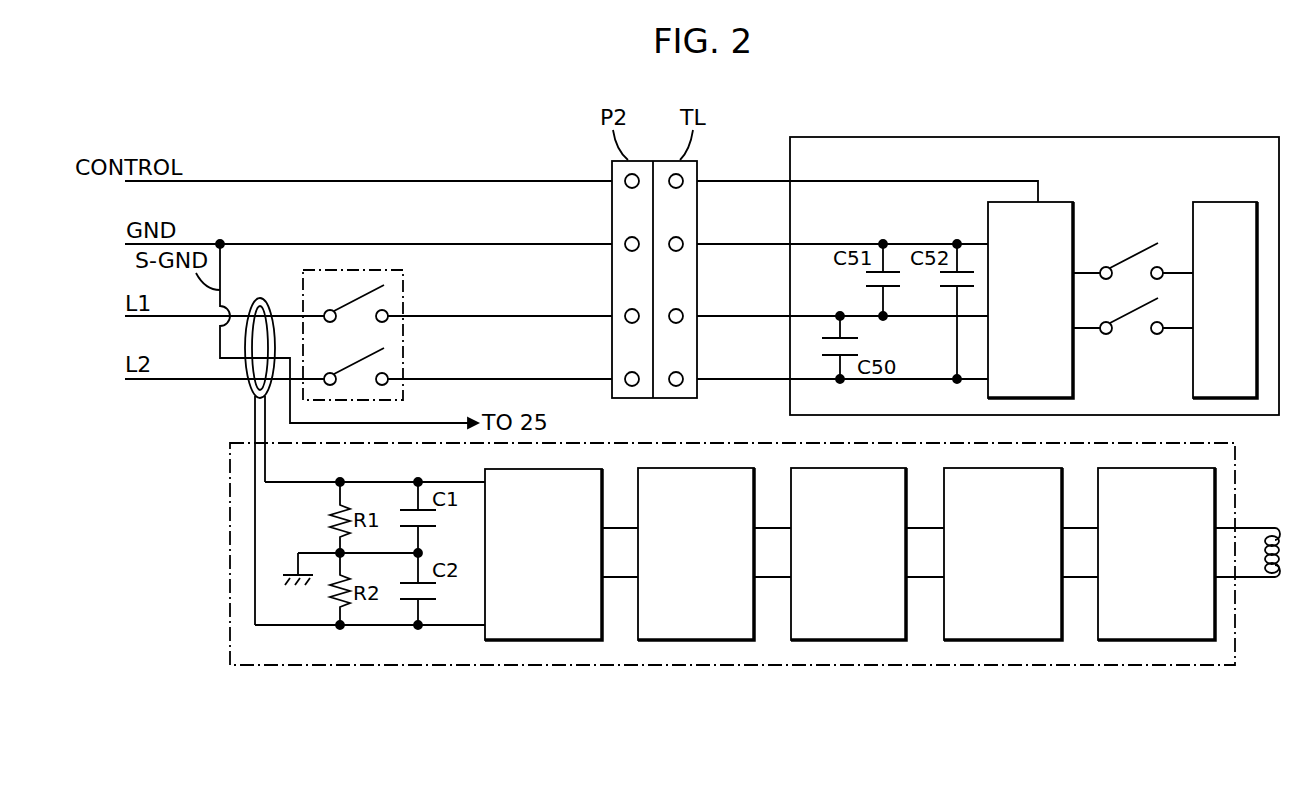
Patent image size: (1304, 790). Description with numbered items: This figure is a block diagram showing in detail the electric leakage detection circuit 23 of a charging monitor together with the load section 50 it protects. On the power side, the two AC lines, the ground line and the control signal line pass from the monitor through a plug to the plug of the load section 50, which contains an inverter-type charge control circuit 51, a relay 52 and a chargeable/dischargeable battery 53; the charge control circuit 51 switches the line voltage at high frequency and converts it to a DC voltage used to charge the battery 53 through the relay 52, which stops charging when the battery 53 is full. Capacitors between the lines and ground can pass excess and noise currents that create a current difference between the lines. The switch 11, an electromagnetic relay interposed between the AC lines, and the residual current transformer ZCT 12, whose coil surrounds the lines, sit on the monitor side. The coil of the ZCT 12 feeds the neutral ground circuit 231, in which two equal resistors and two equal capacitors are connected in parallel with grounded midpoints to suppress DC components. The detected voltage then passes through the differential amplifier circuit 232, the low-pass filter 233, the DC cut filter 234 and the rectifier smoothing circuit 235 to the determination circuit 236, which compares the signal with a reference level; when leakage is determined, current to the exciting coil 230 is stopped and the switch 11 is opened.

The switch 11 is at (405, 288).
The residual current transformer (ZCT) 12 is at (258, 298).
The load section 50 is at (1173, 136).
The charge control circuit 51 is at (1058, 200).
The relay 52 is at (1130, 240).
The battery 53 is at (1222, 200).
The electric leakage detection circuit 23 is at (1222, 668).
The exciting coil 230 is at (1272, 528).
The neutral ground circuit 231 is at (277, 640).
The differential amplifier circuit 232 is at (541, 641).
The low-pass filter 233 is at (699, 641).
The DC cut filter 234 is at (845, 641).
The rectifier smoothing circuit 235 is at (999, 641).
The determination circuit 236 is at (1155, 641).